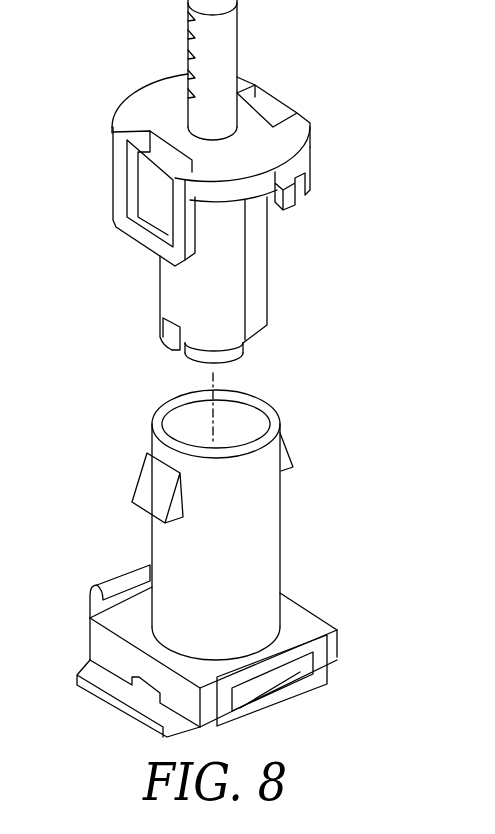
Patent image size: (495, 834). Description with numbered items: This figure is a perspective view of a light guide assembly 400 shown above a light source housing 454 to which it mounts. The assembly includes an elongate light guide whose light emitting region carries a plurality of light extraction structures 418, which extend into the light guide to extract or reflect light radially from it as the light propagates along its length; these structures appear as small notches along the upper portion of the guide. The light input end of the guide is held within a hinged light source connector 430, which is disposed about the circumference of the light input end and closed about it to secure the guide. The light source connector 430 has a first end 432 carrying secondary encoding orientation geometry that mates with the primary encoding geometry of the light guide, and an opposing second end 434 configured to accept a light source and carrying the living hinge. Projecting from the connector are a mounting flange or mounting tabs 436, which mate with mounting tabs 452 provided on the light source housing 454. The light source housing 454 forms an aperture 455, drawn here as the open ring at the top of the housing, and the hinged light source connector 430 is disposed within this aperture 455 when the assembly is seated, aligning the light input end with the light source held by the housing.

The light guide assembly 400 is at (92, 332).
The light extraction structures 418 is at (188, 40).
The first end 432 is at (257, 125).
The mounting tabs 436 is at (128, 234).
The light source connector 430 is at (268, 278).
The second end 434 is at (236, 362).
The light source housing 454 is at (118, 540).
The mounting tabs 452 is at (287, 457).
The aperture 455 is at (172, 411).